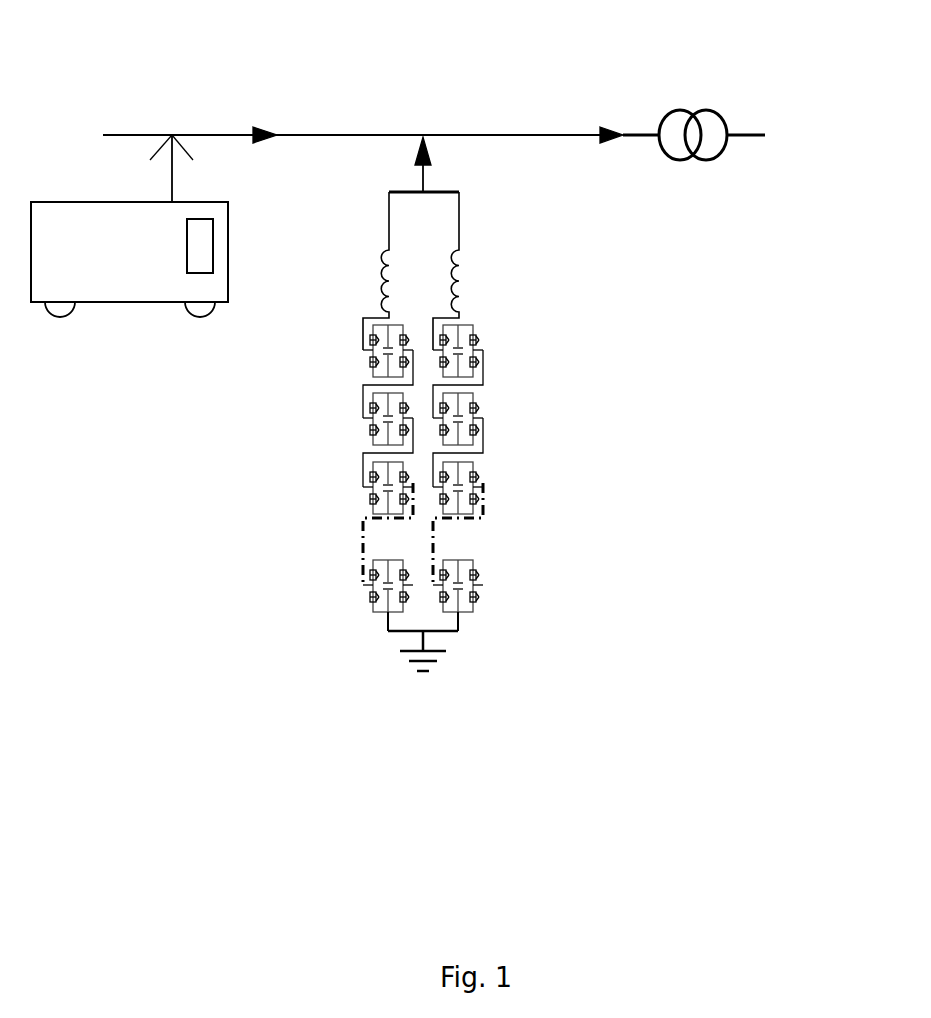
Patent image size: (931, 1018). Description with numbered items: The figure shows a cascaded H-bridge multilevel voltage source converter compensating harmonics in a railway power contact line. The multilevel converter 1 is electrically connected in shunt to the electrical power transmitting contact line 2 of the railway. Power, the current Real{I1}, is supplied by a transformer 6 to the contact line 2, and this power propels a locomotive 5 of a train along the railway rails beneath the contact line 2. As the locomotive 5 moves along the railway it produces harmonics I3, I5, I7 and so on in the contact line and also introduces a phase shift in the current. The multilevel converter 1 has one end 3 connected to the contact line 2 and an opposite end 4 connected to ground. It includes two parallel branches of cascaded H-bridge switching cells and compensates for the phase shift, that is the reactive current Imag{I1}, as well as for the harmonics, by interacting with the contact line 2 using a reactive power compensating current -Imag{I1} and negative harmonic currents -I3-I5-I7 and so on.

The multilevel converter 1 is at (342, 283).
The contact line 2 is at (348, 135).
The end 3 is at (423, 175).
The opposite end 4 is at (405, 641).
The locomotive 5 is at (129, 279).
The transformer 6 is at (720, 155).